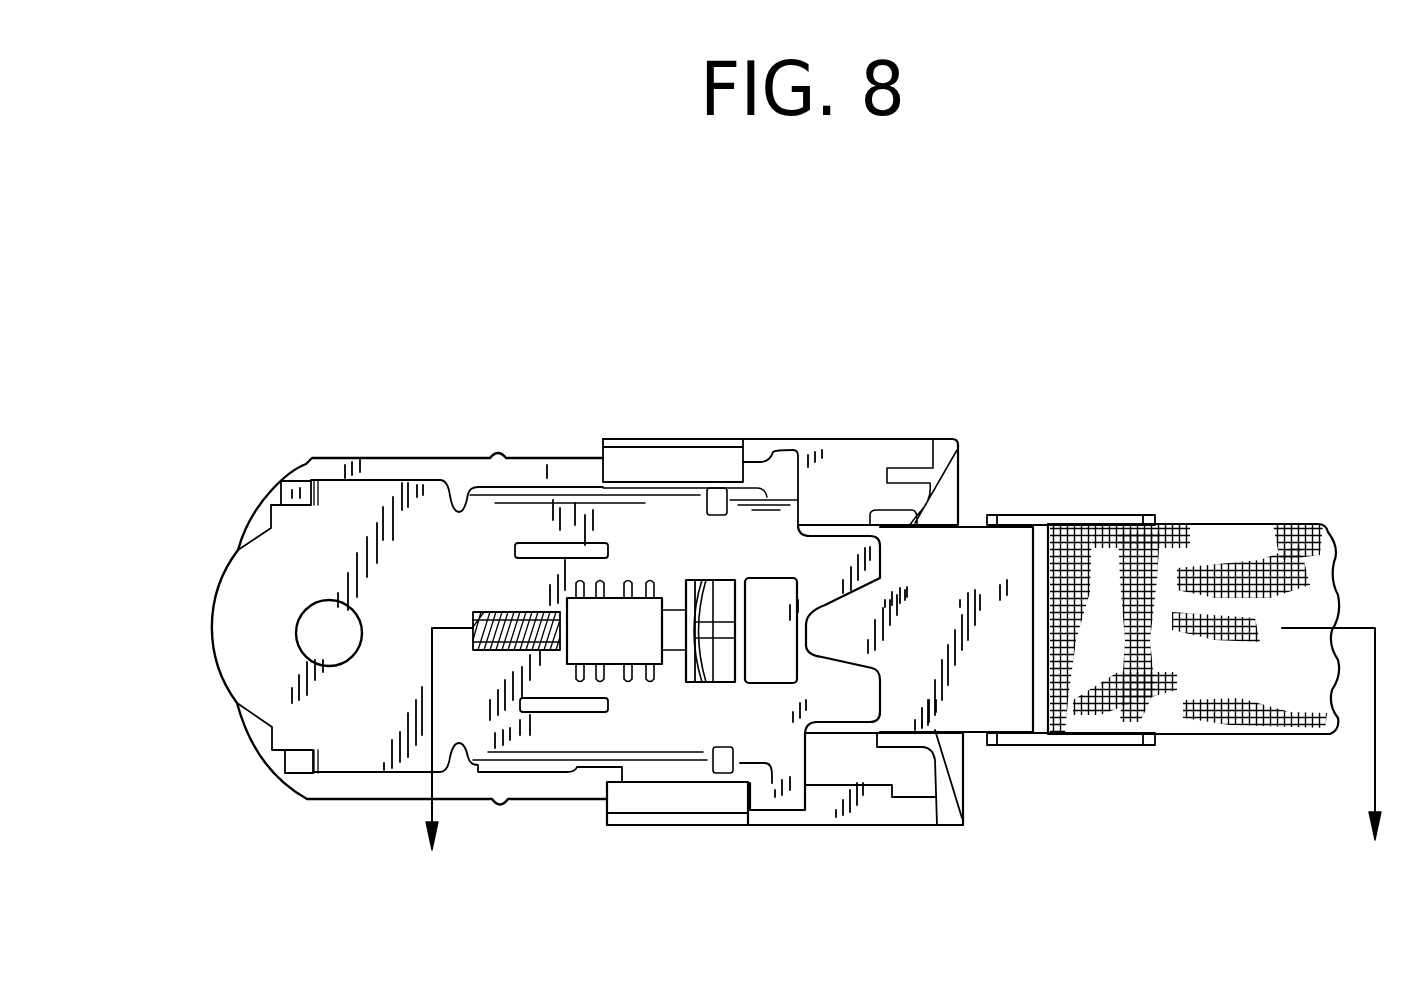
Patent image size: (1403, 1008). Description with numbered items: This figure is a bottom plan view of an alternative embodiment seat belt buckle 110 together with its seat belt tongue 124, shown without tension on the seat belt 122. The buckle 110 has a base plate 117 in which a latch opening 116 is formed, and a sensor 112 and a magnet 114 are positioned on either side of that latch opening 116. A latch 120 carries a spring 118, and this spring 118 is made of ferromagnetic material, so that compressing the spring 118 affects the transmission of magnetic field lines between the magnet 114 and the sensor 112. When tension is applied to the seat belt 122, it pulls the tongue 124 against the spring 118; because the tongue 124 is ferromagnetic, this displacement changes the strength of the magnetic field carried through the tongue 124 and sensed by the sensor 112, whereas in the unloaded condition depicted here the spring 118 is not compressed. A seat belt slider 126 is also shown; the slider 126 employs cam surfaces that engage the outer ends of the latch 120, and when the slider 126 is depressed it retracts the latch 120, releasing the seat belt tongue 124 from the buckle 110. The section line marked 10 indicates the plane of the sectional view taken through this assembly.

The seat belt buckle 110 is at (474, 403).
The base plate 117 is at (296, 600).
The section line 10 is at (909, 768).
The sensor 112 is at (640, 617).
The latch opening 116 is at (702, 578).
The spring 118 is at (698, 682).
The latch 120 is at (733, 597).
The magnet 114 is at (782, 594).
The tongue 124 is at (1020, 690).
The seat belt slider 126 is at (857, 828).
The seat belt 122 is at (1225, 522).